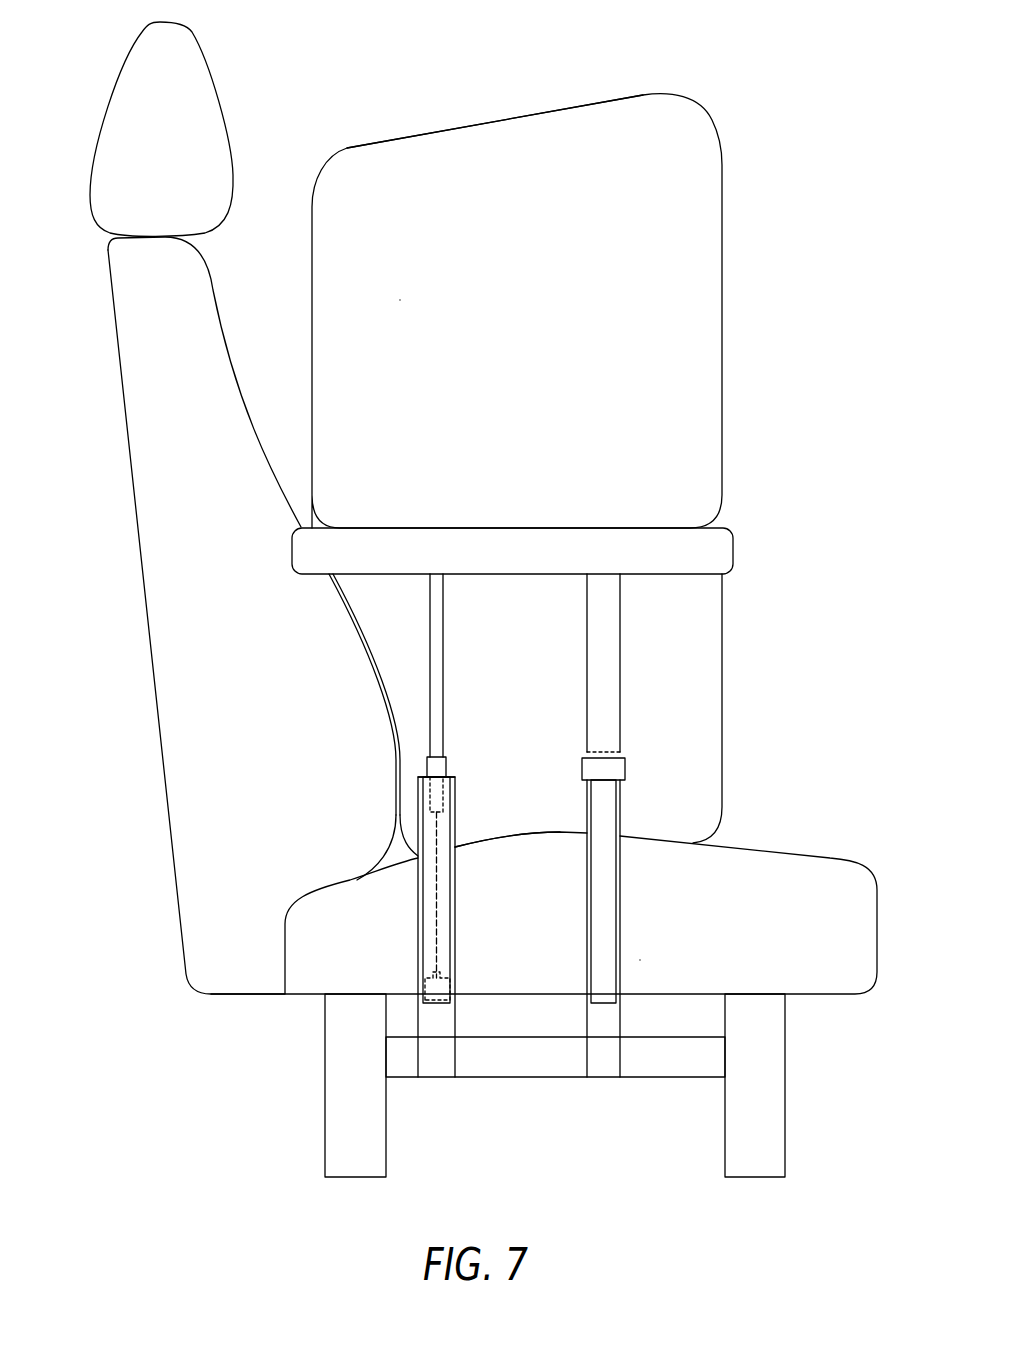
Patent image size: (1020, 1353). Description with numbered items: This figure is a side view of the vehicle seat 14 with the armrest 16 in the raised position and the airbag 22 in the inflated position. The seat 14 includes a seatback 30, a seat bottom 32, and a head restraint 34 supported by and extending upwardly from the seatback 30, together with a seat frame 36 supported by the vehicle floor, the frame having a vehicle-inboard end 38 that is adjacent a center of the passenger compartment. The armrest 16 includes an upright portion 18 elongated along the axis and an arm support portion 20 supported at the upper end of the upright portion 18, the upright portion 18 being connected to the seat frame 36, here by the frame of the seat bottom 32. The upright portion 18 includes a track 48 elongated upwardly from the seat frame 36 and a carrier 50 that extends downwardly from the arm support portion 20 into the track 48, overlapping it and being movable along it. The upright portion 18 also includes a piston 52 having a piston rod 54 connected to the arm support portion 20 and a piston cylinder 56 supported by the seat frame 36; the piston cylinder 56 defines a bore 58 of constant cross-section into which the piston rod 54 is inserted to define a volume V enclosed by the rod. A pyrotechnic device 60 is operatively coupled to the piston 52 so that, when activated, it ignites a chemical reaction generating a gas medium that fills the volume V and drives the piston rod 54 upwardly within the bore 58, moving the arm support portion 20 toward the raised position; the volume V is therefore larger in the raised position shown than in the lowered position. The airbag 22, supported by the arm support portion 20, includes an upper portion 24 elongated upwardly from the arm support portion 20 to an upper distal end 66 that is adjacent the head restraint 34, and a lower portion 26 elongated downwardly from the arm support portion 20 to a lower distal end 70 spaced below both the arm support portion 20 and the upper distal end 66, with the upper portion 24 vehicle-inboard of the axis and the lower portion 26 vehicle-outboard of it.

The vehicle seat 14 is at (125, 498).
The armrest 16 is at (383, 608).
The upright portion 18 is at (655, 949).
The arm support portion 20 is at (733, 550).
The airbag 22 is at (732, 313).
The upper portion 24 is at (693, 248).
The lower portion 26 is at (695, 682).
The seatback 30 is at (197, 342).
The seat bottom 32 is at (828, 870).
The head restraint 34 is at (195, 113).
The seat frame 36 is at (795, 1081).
The vehicle-inboard end 38 is at (672, 1062).
The track 48 is at (607, 897).
The carrier 50 is at (605, 640).
The piston 52 is at (455, 760).
The piston rod 54 is at (437, 640).
The piston cylinder 56 is at (425, 765).
The bore 58 is at (455, 935).
The pyrotechnic device 60 is at (453, 988).
The upper distal end 66 is at (527, 113).
The lower distal end 70 is at (547, 837).
The volume V is at (437, 830).